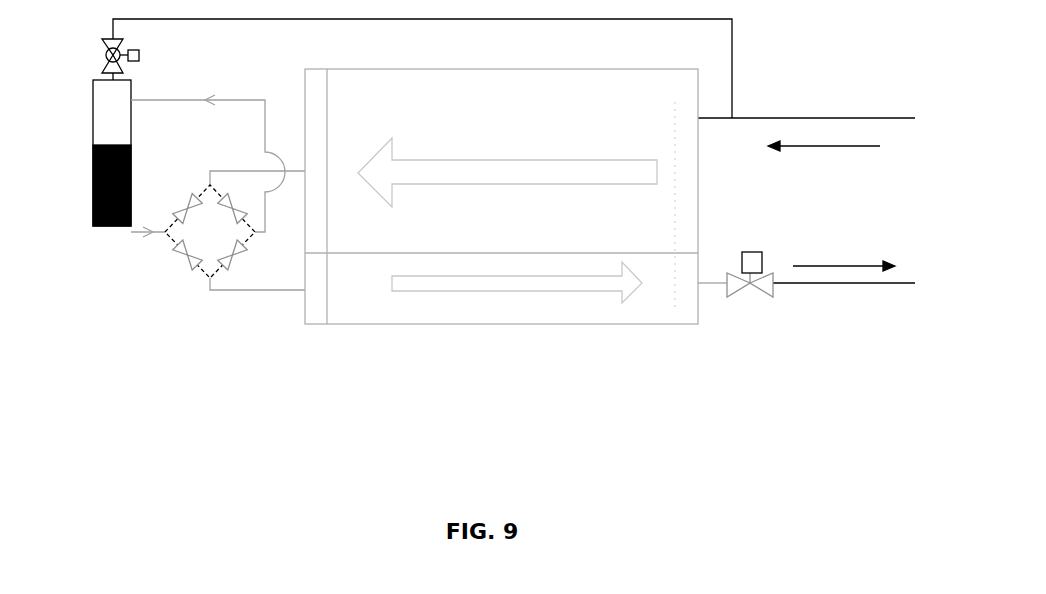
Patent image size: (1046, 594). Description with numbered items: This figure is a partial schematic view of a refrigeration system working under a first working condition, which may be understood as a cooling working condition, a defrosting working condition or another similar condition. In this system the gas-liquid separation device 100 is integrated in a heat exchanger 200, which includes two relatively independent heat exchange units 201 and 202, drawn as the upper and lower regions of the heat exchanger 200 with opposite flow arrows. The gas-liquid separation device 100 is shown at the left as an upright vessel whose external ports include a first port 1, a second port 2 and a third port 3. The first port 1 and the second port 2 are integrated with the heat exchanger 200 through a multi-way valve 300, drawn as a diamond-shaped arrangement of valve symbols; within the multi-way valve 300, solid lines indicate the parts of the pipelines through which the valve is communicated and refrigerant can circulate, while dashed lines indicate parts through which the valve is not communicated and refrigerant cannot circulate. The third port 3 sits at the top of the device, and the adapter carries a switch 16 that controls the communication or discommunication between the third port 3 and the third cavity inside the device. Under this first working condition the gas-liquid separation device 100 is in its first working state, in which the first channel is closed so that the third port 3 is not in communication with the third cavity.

The first port 1 is at (131, 117).
The second port 2 is at (110, 226).
The third port 3 is at (111, 38).
The switch 16 is at (106, 55).
The gas-liquid separation device 100 is at (92, 144).
The heat exchanger 200 is at (501, 255).
The heat exchange unit 201 is at (402, 229).
The heat exchange unit 202 is at (517, 337).
The multi-way valve 300 is at (178, 264).